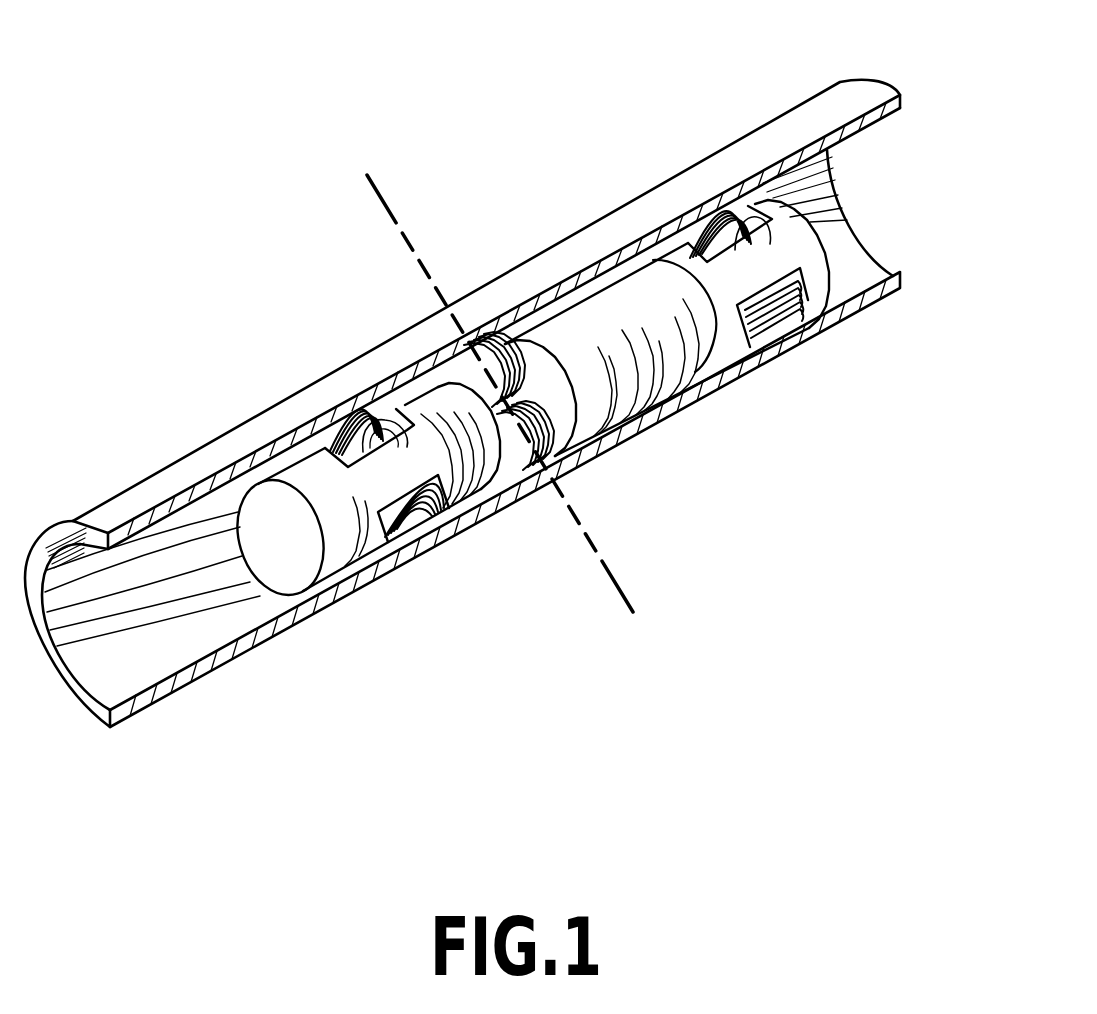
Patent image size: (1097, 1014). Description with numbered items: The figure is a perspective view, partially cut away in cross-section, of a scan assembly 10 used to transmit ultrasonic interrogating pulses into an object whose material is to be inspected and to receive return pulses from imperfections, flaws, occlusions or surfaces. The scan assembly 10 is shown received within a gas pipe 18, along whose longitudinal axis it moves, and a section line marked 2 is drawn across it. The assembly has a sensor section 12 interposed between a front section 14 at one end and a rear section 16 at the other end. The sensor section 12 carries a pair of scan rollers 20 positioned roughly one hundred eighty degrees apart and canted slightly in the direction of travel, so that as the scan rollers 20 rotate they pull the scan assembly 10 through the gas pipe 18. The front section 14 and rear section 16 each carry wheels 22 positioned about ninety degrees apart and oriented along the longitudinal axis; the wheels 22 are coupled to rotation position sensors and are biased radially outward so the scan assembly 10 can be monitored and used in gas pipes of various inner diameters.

The scan assembly 10 is at (563, 303).
The sensor section 12 is at (726, 240).
The front section 14 is at (312, 478).
The rear section 16 is at (803, 246).
The gas pipe 18 is at (828, 322).
The scan rollers 20 is at (517, 340).
The wheels 22 is at (420, 392).
The section line 2- 2 is at (678, 584).